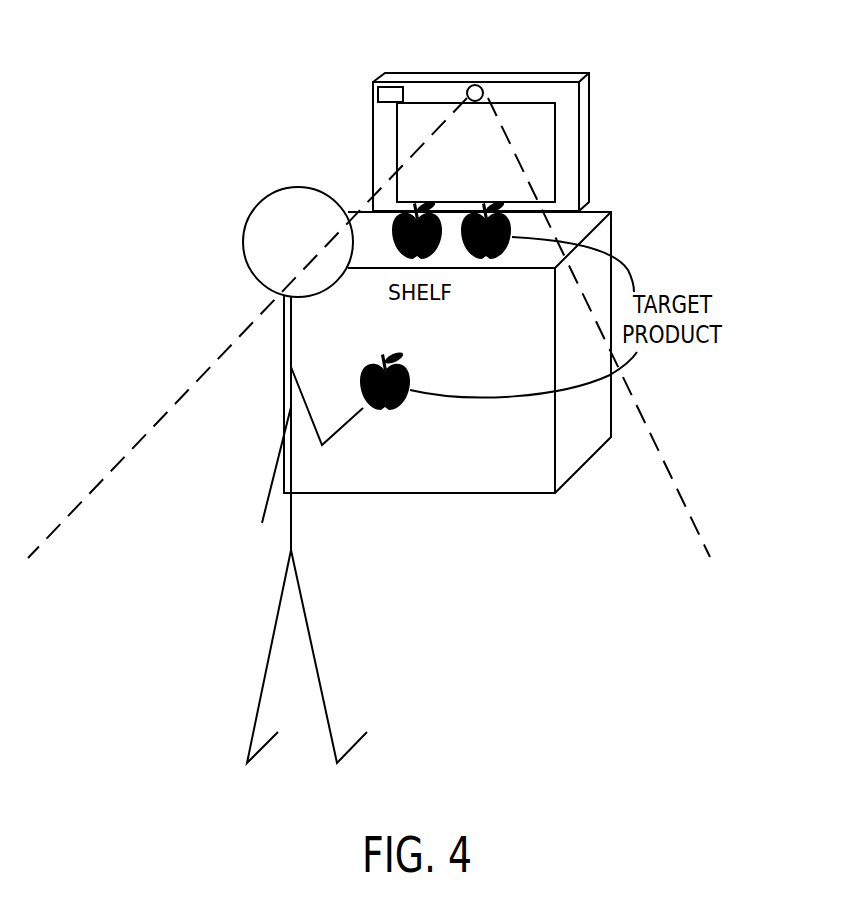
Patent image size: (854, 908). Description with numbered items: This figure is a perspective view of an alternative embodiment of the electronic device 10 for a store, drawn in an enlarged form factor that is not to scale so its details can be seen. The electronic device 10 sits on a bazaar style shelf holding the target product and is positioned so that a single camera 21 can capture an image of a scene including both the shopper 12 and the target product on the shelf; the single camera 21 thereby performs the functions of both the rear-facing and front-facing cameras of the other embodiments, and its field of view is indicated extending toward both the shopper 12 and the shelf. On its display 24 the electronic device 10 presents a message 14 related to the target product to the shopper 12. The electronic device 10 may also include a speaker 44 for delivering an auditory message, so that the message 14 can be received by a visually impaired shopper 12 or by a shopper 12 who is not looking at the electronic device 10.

The electronic device 10 is at (590, 73).
The shopper 12 is at (297, 217).
The message 14 is at (505, 168).
The single camera 21 is at (475, 84).
The display 24 is at (557, 155).
The speaker 44 is at (392, 82).